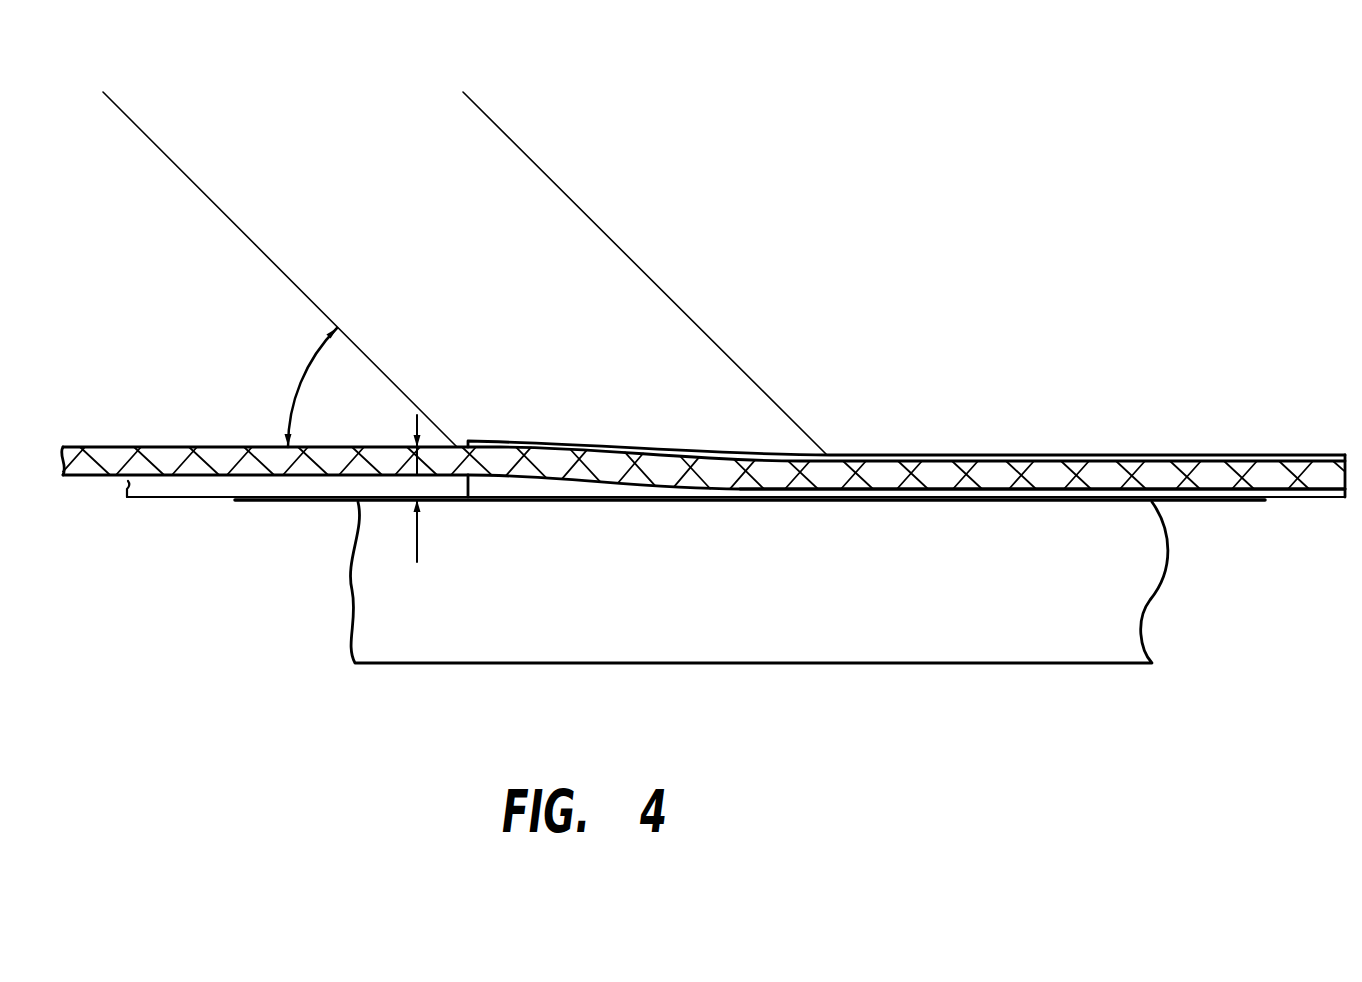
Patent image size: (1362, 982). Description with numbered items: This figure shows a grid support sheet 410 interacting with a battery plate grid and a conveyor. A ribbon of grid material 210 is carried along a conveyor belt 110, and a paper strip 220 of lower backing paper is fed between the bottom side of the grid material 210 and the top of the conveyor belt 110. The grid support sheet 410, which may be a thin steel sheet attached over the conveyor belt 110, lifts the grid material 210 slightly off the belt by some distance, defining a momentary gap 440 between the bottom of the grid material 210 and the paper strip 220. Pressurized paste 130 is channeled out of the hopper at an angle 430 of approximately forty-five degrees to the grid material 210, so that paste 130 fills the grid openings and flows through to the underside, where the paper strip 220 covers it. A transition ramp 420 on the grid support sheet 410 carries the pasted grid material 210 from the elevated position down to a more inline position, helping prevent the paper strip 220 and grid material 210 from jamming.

The conveyor belt 110 is at (988, 634).
The paste 130 is at (310, 185).
The grid material 210 is at (107, 446).
The paper strip 220 is at (527, 500).
The grid support sheet 410 is at (160, 490).
The transition ramp 420 is at (514, 455).
The angle 430 is at (294, 387).
The gap 440 is at (415, 485).